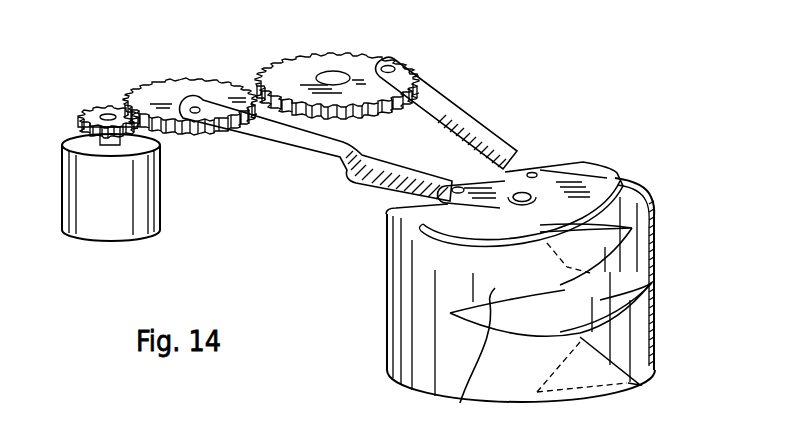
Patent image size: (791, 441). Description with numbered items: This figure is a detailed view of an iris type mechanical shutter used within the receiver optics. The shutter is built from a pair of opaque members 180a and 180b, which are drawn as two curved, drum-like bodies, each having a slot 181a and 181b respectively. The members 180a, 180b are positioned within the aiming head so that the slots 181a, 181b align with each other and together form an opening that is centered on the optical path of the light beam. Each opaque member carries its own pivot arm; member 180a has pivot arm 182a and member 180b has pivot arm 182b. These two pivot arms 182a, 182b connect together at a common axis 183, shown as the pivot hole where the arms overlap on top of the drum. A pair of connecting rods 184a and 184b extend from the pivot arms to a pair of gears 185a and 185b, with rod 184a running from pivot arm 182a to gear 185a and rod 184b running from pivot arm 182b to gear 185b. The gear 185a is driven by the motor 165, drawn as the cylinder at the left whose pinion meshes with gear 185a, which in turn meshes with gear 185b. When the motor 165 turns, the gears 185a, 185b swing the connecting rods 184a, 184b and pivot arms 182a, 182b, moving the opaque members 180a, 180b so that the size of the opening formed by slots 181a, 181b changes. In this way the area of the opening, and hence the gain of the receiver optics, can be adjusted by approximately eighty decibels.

The motor 165 is at (150, 186).
The gear 185a is at (172, 84).
The gear 185b is at (335, 63).
The connecting rod 184a is at (318, 148).
The connecting rod 184b is at (450, 113).
The common axis 183 is at (517, 193).
The pivot arm 182a is at (397, 218).
The pivot arm 182b is at (563, 178).
The opaque member 180a is at (405, 315).
The opaque member 180b is at (513, 297).
The slot 181a is at (462, 401).
The slot 181b is at (650, 290).